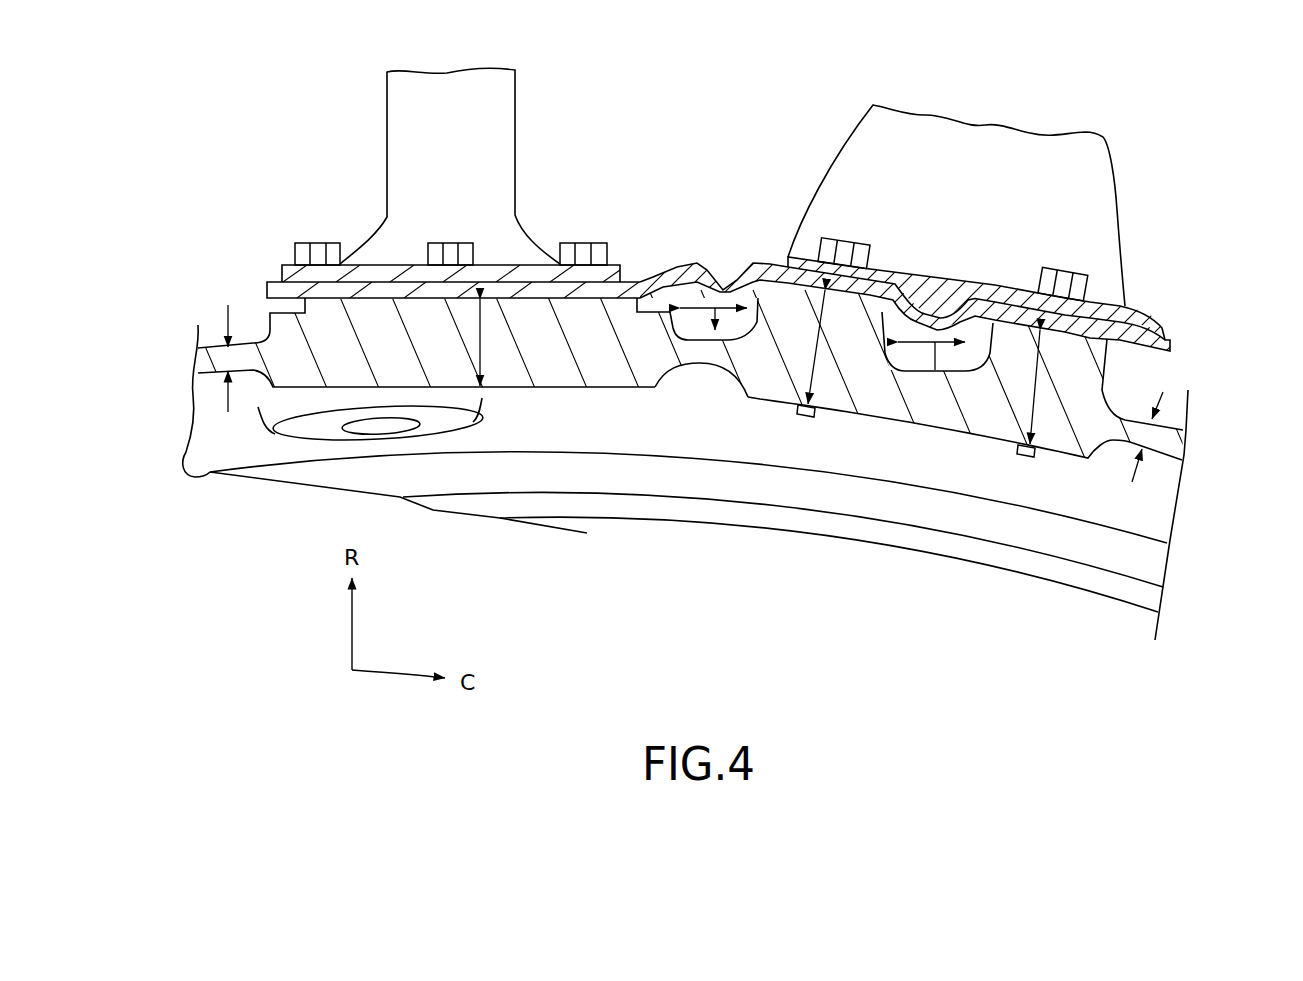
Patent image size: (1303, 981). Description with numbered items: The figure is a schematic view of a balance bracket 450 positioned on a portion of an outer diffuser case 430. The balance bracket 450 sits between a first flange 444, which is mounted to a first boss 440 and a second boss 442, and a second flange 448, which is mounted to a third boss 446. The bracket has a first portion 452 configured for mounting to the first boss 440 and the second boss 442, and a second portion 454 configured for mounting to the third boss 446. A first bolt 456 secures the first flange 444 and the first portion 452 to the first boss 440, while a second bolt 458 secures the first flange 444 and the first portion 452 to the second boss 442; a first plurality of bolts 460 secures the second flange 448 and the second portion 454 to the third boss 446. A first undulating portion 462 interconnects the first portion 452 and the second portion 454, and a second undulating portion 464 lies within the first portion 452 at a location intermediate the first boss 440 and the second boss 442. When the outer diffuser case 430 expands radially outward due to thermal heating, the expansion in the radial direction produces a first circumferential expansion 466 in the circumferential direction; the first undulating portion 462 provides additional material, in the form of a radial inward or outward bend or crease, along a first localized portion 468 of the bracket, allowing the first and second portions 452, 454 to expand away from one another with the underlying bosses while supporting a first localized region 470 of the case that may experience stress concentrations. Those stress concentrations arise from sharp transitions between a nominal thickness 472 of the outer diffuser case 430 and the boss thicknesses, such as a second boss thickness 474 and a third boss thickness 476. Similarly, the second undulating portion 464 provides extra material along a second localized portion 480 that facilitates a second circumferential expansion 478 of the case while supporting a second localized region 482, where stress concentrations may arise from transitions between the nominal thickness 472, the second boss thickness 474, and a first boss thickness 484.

The outer diffuser case 430 is at (210, 206).
The first boss 440 is at (1063, 377).
The second boss 442 is at (815, 347).
The first flange 444 is at (1095, 175).
The third boss 446 is at (528, 303).
The second flange 448 is at (500, 115).
The balance bracket 450 is at (1162, 328).
The first portion 452 is at (1172, 345).
The second portion 454 is at (273, 289).
The first bolt 456 is at (1058, 272).
The second bolt 458 is at (845, 240).
The first plurality of bolts 460 is at (560, 262).
The first undulating portion 462 is at (658, 222).
The second undulating portion 464 is at (893, 320).
The first circumferential expansion 466 is at (688, 366).
The first localized portion 468 is at (707, 248).
The first localized region 470 is at (679, 345).
The nominal thickness 472 is at (228, 403).
The second boss thickness 474 is at (812, 375).
The third boss thickness 476 is at (483, 345).
The second circumferential expansion 478 is at (935, 350).
The second localized portion 480 is at (970, 328).
The second localized region 482 is at (883, 362).
The first boss thickness 484 is at (1033, 410).